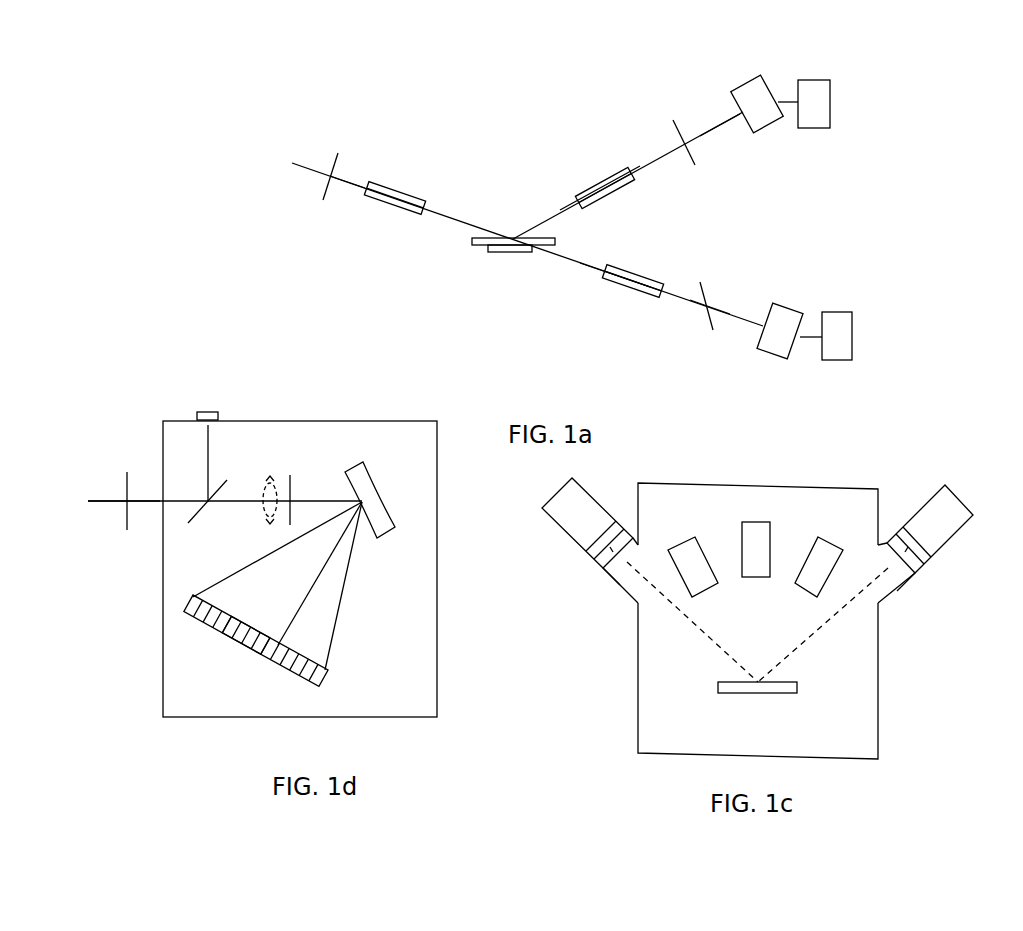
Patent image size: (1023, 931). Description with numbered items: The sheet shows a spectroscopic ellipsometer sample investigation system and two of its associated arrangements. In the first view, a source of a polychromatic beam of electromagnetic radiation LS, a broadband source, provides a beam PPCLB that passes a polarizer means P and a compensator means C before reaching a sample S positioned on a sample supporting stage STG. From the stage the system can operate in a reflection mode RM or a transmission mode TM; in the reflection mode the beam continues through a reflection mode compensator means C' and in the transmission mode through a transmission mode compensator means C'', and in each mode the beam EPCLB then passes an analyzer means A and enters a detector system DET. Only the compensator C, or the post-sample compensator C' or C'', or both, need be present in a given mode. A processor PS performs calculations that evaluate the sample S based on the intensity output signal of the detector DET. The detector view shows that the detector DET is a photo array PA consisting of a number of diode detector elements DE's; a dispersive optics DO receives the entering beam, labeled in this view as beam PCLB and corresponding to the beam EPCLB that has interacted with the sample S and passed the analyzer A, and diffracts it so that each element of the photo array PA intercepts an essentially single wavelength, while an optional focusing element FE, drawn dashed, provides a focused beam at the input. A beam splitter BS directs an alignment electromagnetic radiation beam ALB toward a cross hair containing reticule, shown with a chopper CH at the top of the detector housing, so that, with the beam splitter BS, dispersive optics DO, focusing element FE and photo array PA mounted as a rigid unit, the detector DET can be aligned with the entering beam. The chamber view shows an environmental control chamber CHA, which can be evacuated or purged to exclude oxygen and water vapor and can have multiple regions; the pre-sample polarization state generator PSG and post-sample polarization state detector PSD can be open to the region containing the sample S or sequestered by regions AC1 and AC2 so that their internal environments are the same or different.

In FIG. 1A, the source of a polychromatic beam of electromagnetic radiation LS is at (266, 142).
In FIG. 1A, the polarizer means P is at (333, 164).
In FIG. 1A, the beam of electromagnetic radiation PPCLB is at (353, 170).
In FIG. 1A, the compensator means C is at (394, 210).
In FIG. 1A, the sample S is at (463, 248).
In FIG. 1D, the sample S is at (290, 492).
In FIG. 1C, the sample S is at (795, 680).
In FIG. 1A, the sample supporting stage STG is at (507, 258).
In FIG. 1A, the reflection mode RM is at (628, 110).
In FIG. 1A, the analyzer means A is at (687, 229).
In FIG. 1D, the analyzer means A is at (127, 492).
In FIG. 1A, the reflection mode compensator means C' is at (604, 194).
In FIG. 1A, the transmission mode compensator means C'' is at (632, 291).
In FIG. 1A, the detector system DET is at (782, 90).
In FIG. 1D, the detector system DET is at (440, 572).
In FIG. 1A, the processor PS is at (815, 220).
In FIG. 1A, the polychromatic electromagnetic beam EPCLB is at (722, 130).
In FIG. 1A, the transmission mode TM is at (663, 340).
In FIG. 1D, the chopper CH is at (207, 410).
In FIG. 1D, the alignment electromagnetic radiation beam ALB is at (210, 460).
In FIG. 1D, the polychromatic light beam PCLB is at (147, 503).
In FIG. 1D, the beam splitter BS is at (207, 509).
In FIG. 1D, the focusing element FE is at (268, 511).
In FIG. 1D, the dispersive optics DO is at (370, 455).
In FIG. 1D, the photo array PA is at (332, 645).
In FIG. 1D, the detector elements DE's is at (221, 660).
In FIG. 1C, the environmental control chamber CHA is at (882, 503).
In FIG. 1C, the polarization state detector PSD is at (590, 540).
In FIG. 1C, the polarization state generator PSG is at (925, 544).
In FIG. 1C, the sequestering chamber region AC1 is at (908, 573).
In FIG. 1C, the sequestering chamber region AC2 is at (600, 573).